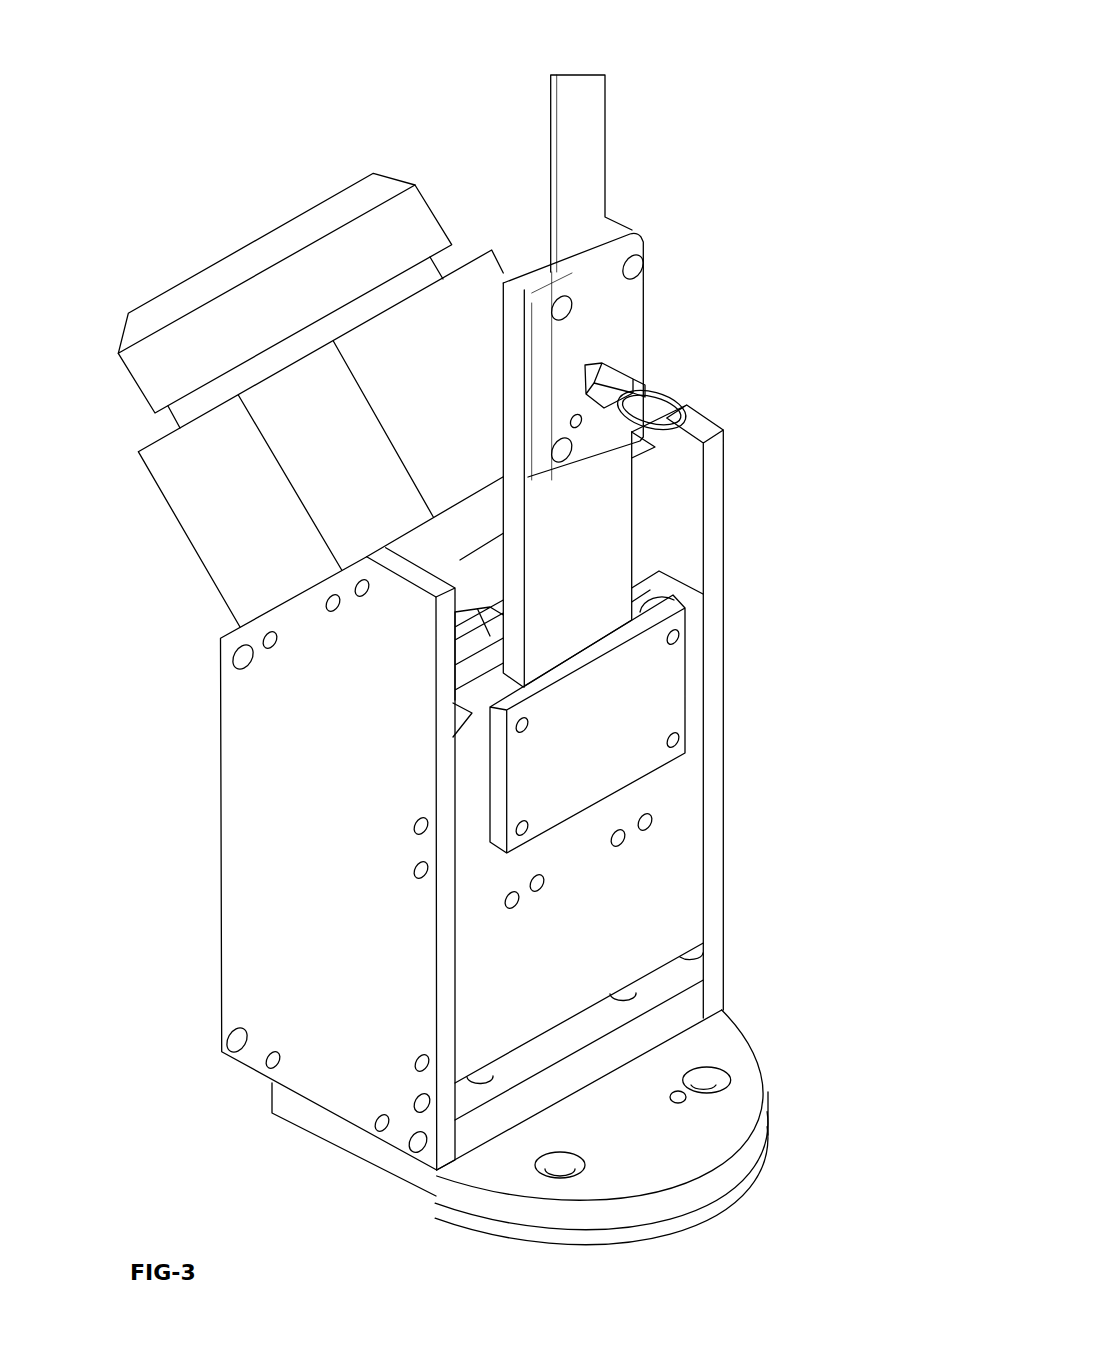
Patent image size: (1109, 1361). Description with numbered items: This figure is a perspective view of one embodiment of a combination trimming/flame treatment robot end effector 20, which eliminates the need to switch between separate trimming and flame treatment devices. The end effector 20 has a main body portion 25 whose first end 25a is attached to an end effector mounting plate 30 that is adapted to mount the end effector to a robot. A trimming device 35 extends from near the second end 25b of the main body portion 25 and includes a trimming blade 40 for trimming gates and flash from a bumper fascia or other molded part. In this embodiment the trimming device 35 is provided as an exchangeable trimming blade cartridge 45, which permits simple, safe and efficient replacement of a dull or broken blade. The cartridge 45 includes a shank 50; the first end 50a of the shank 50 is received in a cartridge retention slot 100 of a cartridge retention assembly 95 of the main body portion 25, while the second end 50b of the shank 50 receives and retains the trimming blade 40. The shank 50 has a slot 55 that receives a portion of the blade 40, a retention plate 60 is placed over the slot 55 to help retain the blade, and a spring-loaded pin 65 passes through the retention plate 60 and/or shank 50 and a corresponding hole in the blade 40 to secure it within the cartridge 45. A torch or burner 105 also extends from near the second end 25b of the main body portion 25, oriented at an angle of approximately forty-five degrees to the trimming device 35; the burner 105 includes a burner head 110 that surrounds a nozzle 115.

The combination trimming/flame treatment robot end effector 20 is at (840, 116).
The main body portion 25 is at (206, 839).
The first end 25a is at (214, 1078).
The second end 25b is at (745, 486).
The end effector mounting plate 30 is at (705, 1132).
The trimming device 35 is at (700, 190).
The trimming blade 40 is at (588, 127).
The exchangeable trimming blade cartridge 45 is at (674, 333).
The shank 50 is at (597, 548).
The first end of the shank 50a is at (483, 658).
The second end of the shank 50b is at (670, 242).
The slot 55 is at (570, 260).
The retention plate 60 is at (626, 236).
The spring-loaded pin 65 is at (648, 376).
The cartridge retention assembly 95 is at (702, 690).
The cartridge retention slot 100 is at (672, 593).
The torch (burner) 105 is at (283, 184).
The burner head 110 is at (125, 386).
The nozzle 115 is at (167, 292).